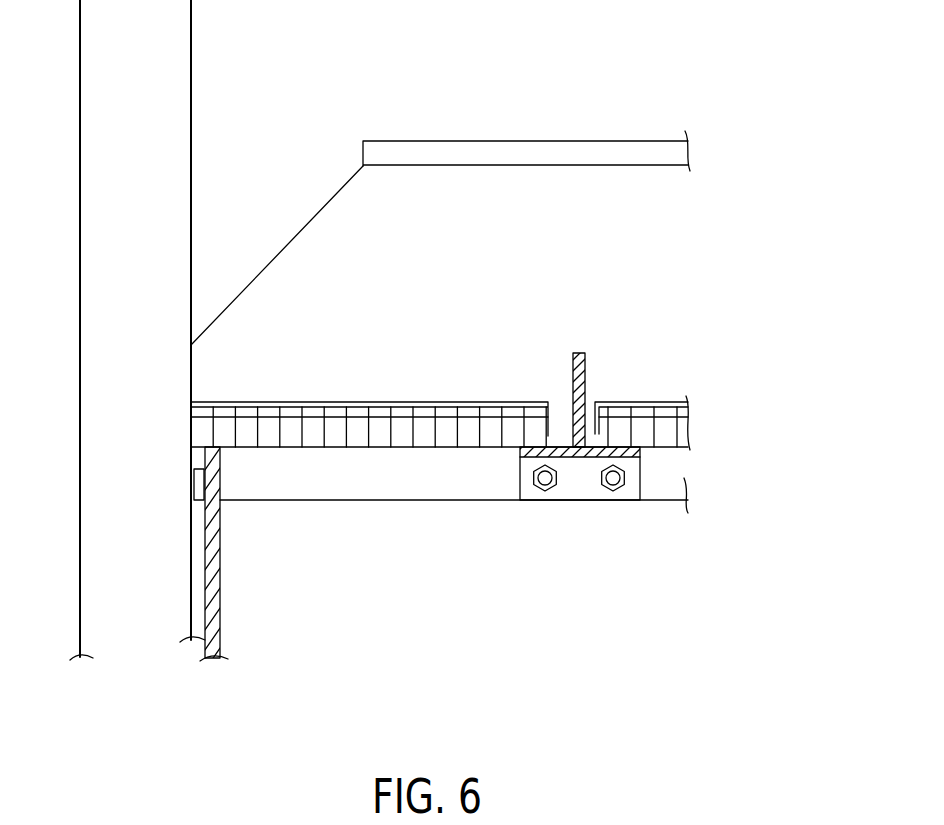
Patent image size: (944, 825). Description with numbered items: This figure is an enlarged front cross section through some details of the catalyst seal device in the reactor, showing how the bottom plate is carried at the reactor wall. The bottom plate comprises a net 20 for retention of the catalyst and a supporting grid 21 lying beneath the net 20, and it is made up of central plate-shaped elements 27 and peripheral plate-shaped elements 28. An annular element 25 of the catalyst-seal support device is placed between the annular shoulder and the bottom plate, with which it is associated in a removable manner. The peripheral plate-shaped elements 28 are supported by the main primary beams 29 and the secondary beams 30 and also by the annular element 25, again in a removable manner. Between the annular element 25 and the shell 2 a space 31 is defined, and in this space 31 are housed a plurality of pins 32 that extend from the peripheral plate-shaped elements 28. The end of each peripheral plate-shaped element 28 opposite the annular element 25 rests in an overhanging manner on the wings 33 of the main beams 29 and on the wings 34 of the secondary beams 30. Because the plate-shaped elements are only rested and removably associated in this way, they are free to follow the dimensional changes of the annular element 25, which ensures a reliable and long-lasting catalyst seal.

The shell 2 is at (105, 622).
The net 20 is at (493, 402).
The supporting grid 21 is at (413, 430).
The annular element 25 is at (223, 613).
The central plate-shaped elements 27 is at (736, 408).
The peripheral plate-shaped elements 28 is at (412, 299).
The main primary beams 29 is at (587, 180).
The secondary beams 30 is at (587, 365).
The space 31 is at (197, 523).
The pins 32 is at (197, 468).
The wings of the main beams 33 is at (300, 473).
The wings of the secondary beams 34 is at (588, 458).